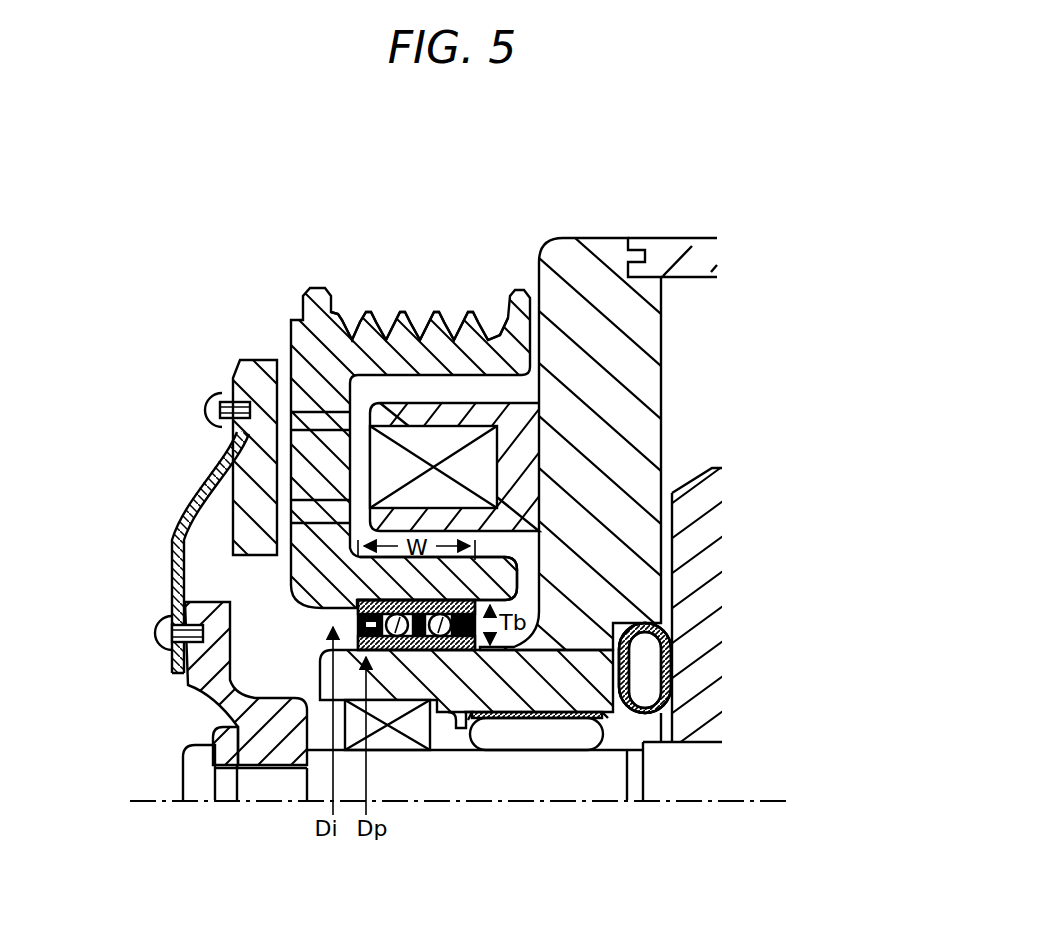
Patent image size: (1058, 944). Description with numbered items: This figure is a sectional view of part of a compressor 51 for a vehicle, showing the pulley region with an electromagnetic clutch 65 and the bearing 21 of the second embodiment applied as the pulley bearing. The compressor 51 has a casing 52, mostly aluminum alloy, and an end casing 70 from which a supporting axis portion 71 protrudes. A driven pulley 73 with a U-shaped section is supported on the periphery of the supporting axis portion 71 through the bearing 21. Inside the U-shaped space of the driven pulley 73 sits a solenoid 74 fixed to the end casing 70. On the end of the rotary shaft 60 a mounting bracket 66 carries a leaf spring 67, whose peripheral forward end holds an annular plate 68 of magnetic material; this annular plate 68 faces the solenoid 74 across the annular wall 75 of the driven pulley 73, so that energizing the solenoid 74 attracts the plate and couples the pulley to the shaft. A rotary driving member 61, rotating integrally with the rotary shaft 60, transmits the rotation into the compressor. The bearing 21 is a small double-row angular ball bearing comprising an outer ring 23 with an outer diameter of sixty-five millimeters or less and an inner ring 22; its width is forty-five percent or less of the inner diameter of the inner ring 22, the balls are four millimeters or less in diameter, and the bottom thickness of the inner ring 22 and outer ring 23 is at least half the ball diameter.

The compressor 51 is at (368, 206).
The driven pulley 73 is at (478, 347).
The outer ring 23 is at (355, 589).
The solenoid 74 is at (401, 440).
The end casing 70 is at (578, 285).
The casing 52 is at (690, 240).
The rotary driving member 61 is at (694, 466).
The bearing 21 is at (295, 736).
The inner ring 22 is at (438, 651).
The supporting axis portion 71 is at (322, 686).
The rotary shaft 60 is at (541, 780).
The electromagnetic clutch 65 is at (198, 582).
The annular plate 68 is at (253, 492).
The annular wall 75 is at (233, 447).
The leaf spring 67 is at (170, 567).
The mounting bracket 66 is at (188, 683).